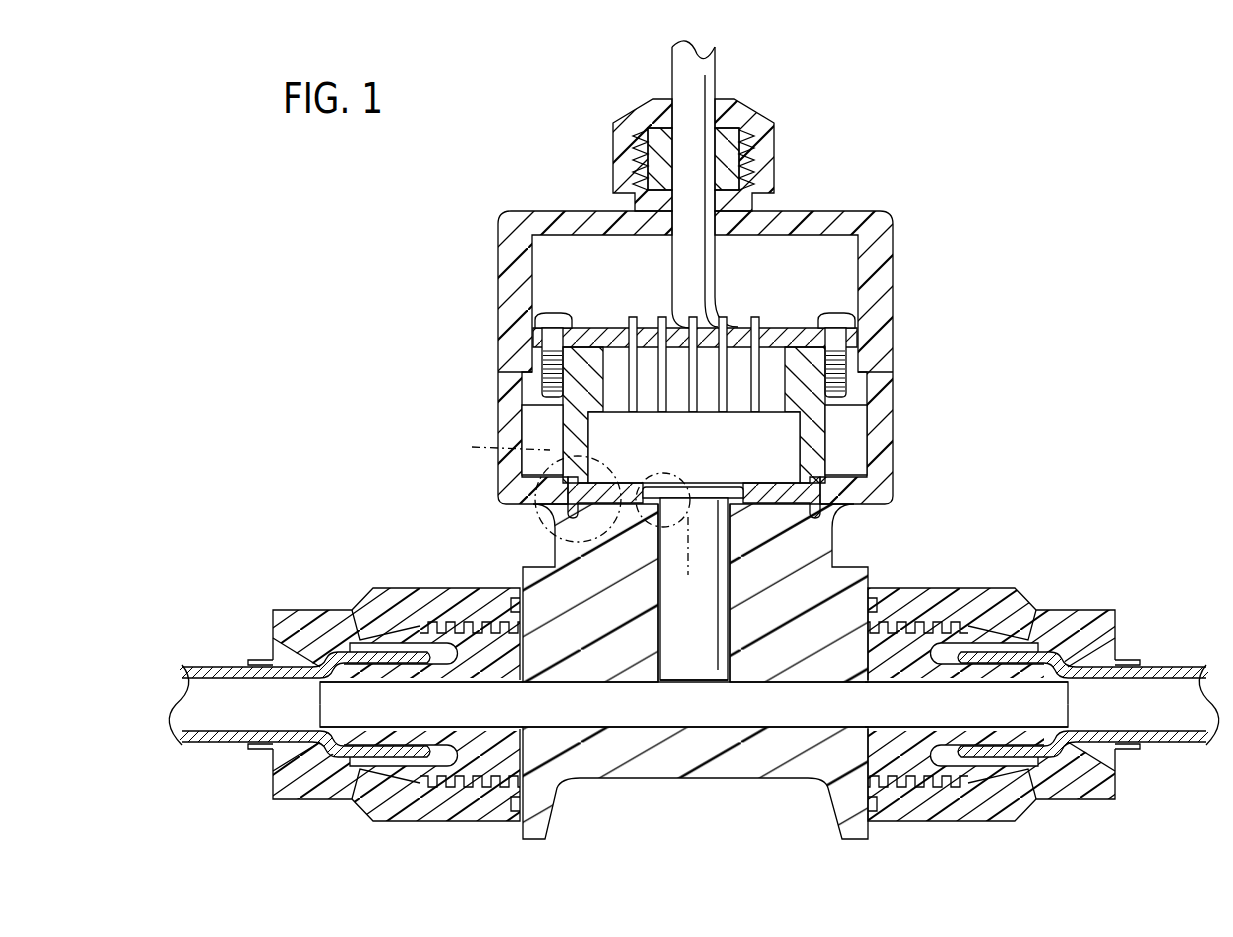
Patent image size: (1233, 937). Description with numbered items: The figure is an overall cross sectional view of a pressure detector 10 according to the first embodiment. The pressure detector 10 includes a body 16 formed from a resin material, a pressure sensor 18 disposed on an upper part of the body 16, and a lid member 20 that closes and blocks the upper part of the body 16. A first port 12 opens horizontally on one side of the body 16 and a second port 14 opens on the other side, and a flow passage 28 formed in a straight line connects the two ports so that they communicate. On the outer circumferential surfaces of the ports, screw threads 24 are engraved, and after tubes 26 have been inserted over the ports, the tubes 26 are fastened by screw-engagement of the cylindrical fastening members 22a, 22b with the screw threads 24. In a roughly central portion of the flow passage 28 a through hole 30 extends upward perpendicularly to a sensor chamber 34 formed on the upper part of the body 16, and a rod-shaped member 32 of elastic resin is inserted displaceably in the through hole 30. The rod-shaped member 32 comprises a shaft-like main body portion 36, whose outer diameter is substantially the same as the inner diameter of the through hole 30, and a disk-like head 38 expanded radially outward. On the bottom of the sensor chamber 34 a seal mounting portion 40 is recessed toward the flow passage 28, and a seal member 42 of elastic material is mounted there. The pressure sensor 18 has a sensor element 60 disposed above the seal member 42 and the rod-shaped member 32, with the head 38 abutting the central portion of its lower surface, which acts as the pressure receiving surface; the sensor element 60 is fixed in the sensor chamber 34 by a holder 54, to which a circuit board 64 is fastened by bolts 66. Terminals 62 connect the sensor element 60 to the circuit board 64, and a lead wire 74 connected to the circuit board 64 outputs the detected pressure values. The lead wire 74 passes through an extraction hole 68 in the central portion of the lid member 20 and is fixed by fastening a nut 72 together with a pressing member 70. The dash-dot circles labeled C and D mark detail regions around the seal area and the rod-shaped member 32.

The pressure detector 10 is at (1019, 170).
The first port 12 is at (342, 725).
The second port 14 is at (1045, 722).
The body 16 is at (700, 786).
The pressure sensor 18 is at (784, 446).
The lid member 20 is at (496, 264).
The fastening member 22a is at (377, 600).
The fastening member 22b is at (1005, 598).
The screw threads 24 is at (450, 788).
The tubes 26 is at (213, 668).
The flow passage 28 is at (778, 718).
The through hole 30 is at (663, 640).
The rod-shaped member 32 is at (703, 672).
The sensor chamber 34 is at (852, 449).
The main body portion 36 is at (715, 622).
The head 38 is at (702, 490).
The seal mounting portion 40 is at (612, 535).
The seal member 42 is at (826, 489).
The holder 54 is at (570, 428).
The sensor element 60 is at (540, 403).
The terminals 62 is at (759, 366).
The circuit board 64 is at (598, 340).
The bolts 66 is at (558, 313).
The extraction hole 68 is at (745, 172).
The pressing member 70 is at (740, 133).
The nut 72 is at (762, 172).
The lead wire 74 is at (697, 78).
The section line C is at (499, 447).
The section line D is at (688, 559).